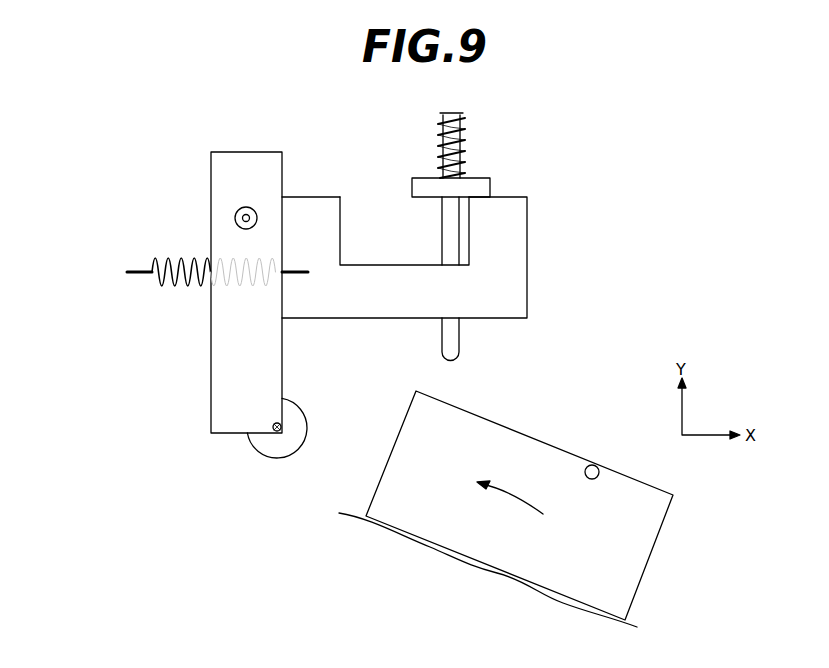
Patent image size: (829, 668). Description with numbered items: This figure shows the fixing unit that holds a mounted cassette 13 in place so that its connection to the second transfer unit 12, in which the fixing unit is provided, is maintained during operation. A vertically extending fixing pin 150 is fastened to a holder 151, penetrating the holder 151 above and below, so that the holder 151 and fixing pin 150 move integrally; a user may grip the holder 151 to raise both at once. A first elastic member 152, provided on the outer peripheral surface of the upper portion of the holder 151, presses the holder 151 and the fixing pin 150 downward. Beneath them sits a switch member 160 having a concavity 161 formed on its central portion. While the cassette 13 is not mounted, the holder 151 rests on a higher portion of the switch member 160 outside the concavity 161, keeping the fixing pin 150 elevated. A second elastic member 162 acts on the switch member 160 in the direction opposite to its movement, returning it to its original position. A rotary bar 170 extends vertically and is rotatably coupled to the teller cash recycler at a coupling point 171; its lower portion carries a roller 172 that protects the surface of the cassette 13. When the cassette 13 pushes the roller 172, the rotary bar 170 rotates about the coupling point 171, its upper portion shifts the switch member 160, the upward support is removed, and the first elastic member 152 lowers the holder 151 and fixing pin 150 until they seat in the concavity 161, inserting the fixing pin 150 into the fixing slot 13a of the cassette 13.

The second transfer unit 12 is at (183, 157).
The cassette 13 is at (661, 504).
The fixing slot 13a is at (594, 464).
The fixing pin 150 is at (460, 346).
The holder 151 is at (484, 186).
The first elastic member 152 is at (466, 135).
The switch member 160 is at (508, 296).
The concavity 161 is at (369, 234).
The second elastic member 162 is at (136, 268).
The rotary bar 170 is at (219, 330).
The coupling point 171 is at (246, 207).
The roller 172 is at (258, 444).